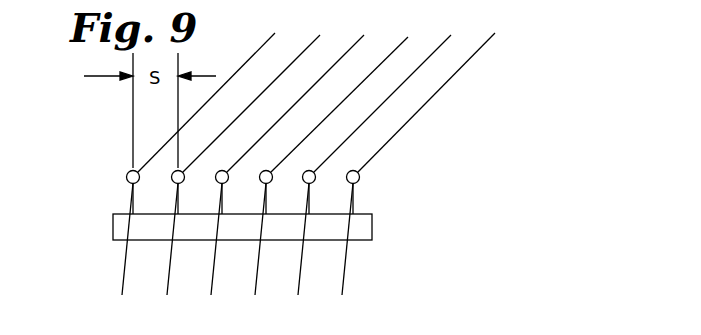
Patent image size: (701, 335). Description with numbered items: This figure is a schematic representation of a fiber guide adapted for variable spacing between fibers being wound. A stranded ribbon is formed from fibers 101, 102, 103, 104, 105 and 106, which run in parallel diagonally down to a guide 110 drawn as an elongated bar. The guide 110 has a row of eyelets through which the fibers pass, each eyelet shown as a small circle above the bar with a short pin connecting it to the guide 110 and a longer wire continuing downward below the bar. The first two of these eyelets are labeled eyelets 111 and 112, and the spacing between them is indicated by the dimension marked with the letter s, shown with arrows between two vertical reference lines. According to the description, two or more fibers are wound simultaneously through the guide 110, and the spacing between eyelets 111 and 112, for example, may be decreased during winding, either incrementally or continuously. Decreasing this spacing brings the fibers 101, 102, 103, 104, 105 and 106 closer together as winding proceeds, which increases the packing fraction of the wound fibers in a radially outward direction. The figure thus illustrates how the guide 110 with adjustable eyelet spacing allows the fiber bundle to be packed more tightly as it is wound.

The fiber 101 is at (263, 45).
The fiber 102 is at (311, 44).
The fiber 103 is at (353, 46).
The fiber 104 is at (425, 27).
The fiber 105 is at (476, 12).
The fiber 106 is at (477, 52).
The guide 110 is at (372, 231).
The eyelet 111 is at (127, 177).
The eyelet 112 is at (172, 179).